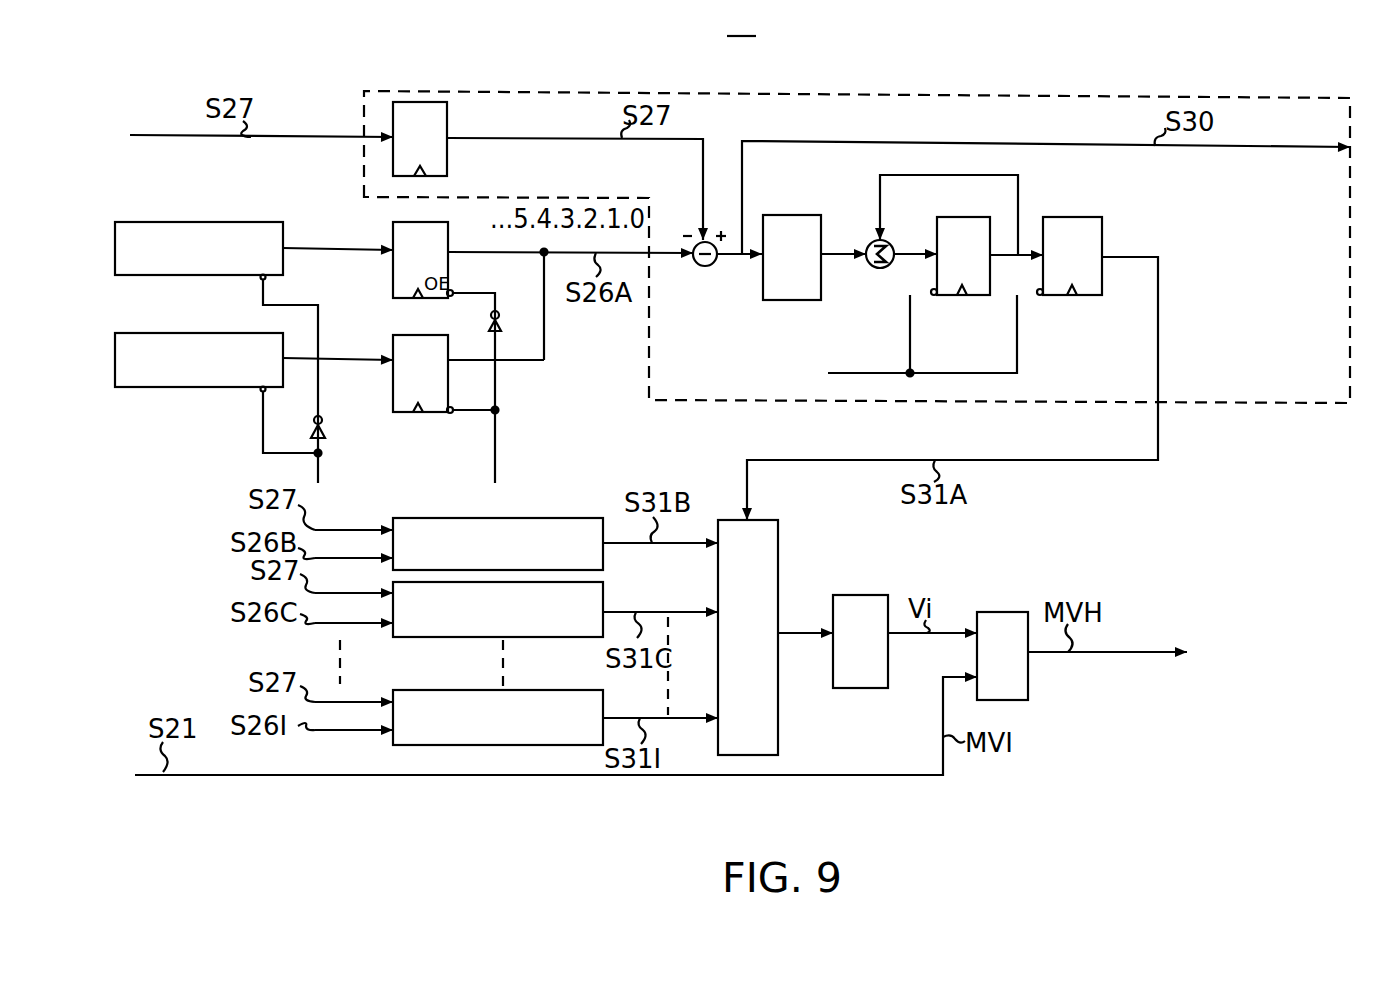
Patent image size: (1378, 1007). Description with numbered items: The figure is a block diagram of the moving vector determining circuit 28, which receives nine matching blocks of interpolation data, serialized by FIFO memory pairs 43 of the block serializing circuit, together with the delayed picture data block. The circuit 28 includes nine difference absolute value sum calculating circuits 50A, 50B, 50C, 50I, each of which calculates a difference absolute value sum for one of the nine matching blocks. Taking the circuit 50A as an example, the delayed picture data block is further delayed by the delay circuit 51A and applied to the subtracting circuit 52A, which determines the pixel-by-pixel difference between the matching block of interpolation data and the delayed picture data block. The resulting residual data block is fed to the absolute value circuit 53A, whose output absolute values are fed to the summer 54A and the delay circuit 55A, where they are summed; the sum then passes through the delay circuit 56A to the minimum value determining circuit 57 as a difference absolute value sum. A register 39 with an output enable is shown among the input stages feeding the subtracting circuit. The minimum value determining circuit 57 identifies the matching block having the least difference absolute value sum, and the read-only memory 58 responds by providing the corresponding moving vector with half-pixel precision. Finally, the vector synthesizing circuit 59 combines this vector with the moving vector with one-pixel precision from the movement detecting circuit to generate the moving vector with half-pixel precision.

The moving vector determining circuit 28 is at (741, 23).
The FIFO memory pair 43 is at (158, 222).
The register with output enable 39 is at (420, 413).
The delay circuit 51A is at (448, 106).
The subtracting circuit 52A is at (712, 266).
The absolute value circuit 53A is at (795, 300).
The summer 54A is at (880, 268).
The delay circuit 55A is at (957, 217).
The delay circuit 56A is at (1066, 217).
The difference absolute value sum calculating circuit 50A is at (1188, 403).
The difference absolute value sum calculating circuit 50B is at (566, 518).
The difference absolute value sum calculating circuit 50C is at (556, 637).
The difference absolute value sum calculating circuit 50I is at (446, 674).
The minimum value determining circuit 57 is at (780, 533).
The read-only memory 58 is at (862, 688).
The vector synthesizing circuit 59 is at (1000, 612).